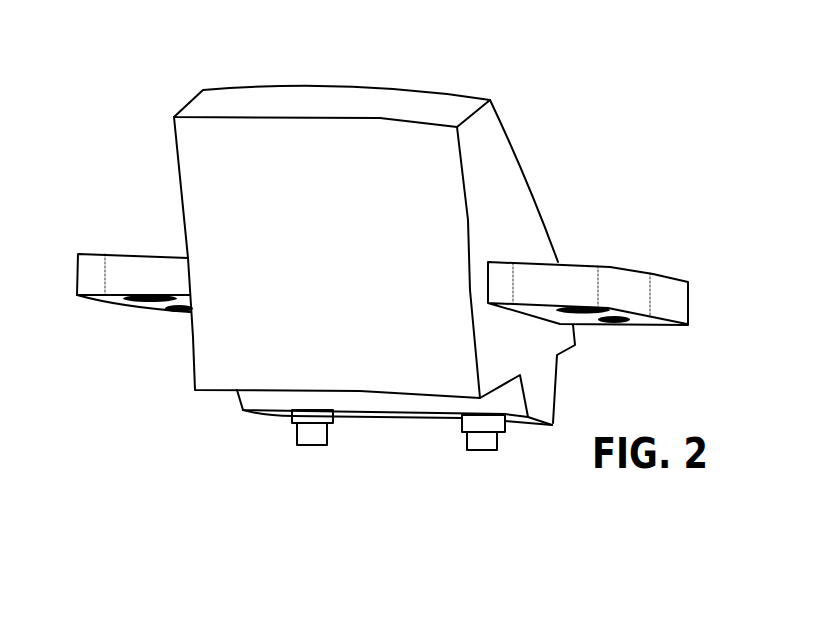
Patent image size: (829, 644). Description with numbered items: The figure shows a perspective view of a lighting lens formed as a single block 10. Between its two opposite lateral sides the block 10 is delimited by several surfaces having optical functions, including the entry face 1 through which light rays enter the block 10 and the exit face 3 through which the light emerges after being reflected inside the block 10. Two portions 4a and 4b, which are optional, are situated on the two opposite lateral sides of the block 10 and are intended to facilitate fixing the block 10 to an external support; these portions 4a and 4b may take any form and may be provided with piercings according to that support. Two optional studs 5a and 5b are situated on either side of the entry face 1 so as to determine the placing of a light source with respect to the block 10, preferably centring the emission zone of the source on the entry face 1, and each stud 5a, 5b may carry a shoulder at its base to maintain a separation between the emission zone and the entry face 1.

The block 10 is at (578, 119).
The exit face for the light 3 is at (228, 318).
The portion for fixing the lighting lens 4a is at (130, 268).
The portion for fixing the lighting lens 4b is at (663, 290).
The entry face for the light 1 is at (390, 434).
The stud 5a is at (308, 447).
The stud 5b is at (481, 452).